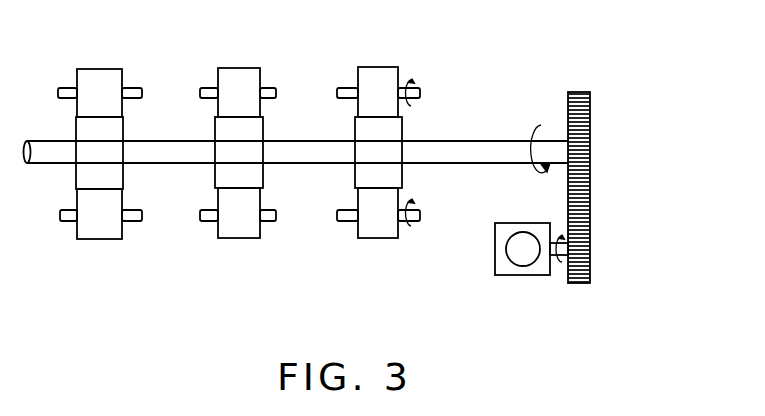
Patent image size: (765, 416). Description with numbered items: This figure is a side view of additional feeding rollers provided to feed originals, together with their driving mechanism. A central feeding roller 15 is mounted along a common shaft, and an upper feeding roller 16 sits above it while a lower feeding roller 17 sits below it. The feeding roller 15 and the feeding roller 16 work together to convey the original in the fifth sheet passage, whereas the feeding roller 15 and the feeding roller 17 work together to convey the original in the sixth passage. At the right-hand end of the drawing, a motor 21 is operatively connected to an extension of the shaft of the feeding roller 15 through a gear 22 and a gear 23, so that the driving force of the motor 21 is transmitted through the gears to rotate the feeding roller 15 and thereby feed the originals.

The feeding roller 15 is at (112, 140).
The feeding roller 16 is at (110, 80).
The feeding roller 17 is at (103, 239).
The motor 21 is at (523, 275).
The gear 22 is at (590, 123).
The gear 23 is at (592, 222).